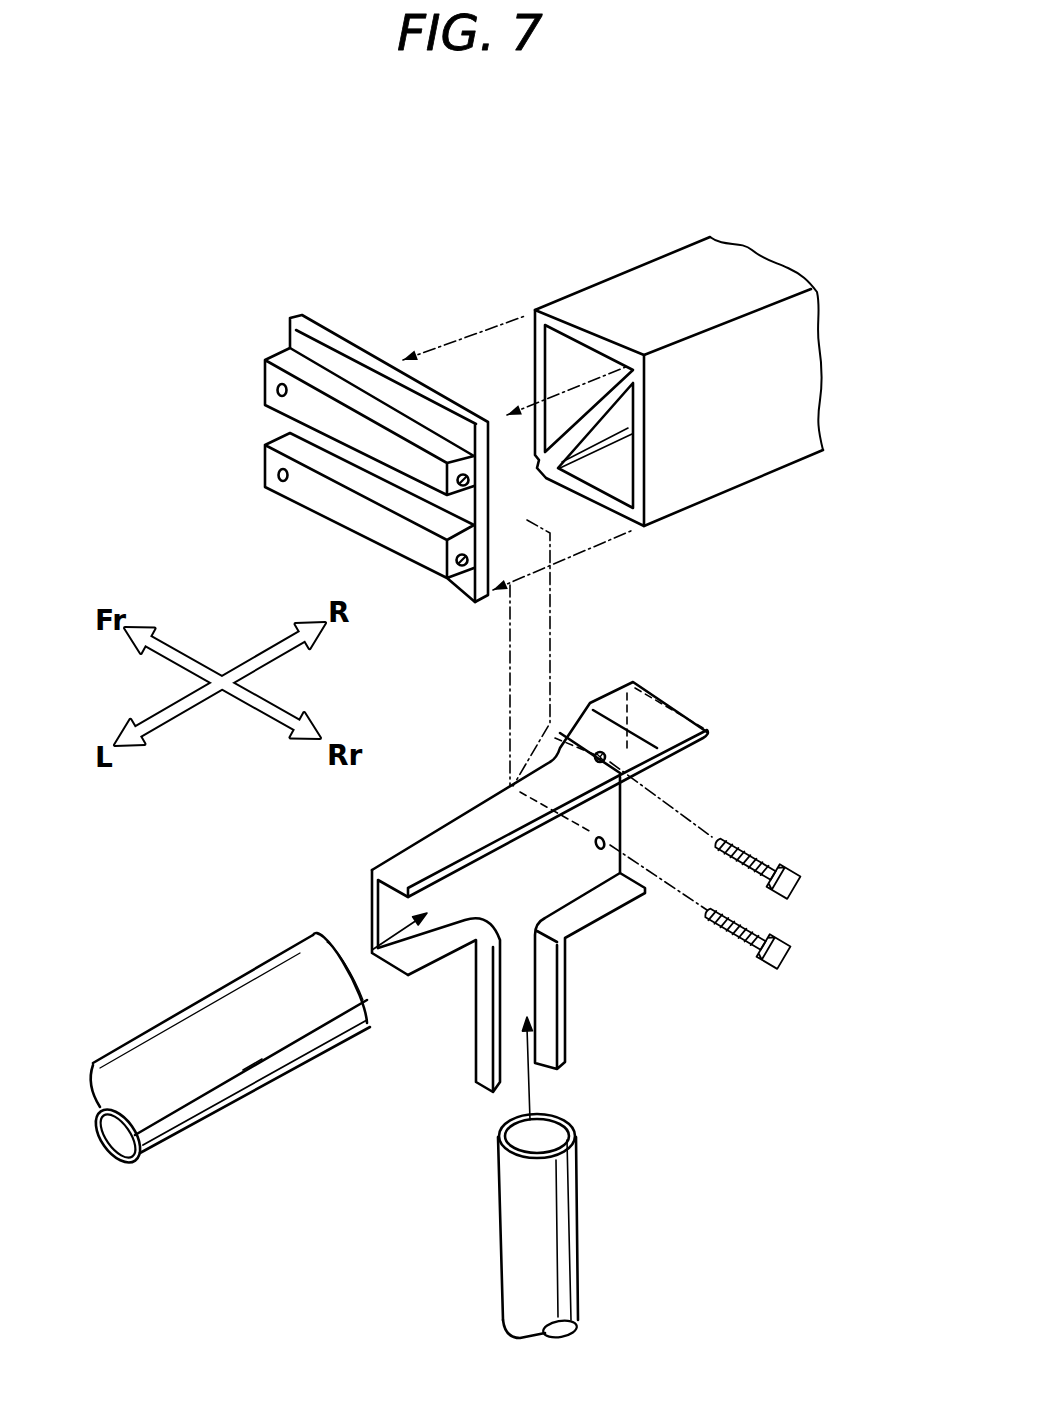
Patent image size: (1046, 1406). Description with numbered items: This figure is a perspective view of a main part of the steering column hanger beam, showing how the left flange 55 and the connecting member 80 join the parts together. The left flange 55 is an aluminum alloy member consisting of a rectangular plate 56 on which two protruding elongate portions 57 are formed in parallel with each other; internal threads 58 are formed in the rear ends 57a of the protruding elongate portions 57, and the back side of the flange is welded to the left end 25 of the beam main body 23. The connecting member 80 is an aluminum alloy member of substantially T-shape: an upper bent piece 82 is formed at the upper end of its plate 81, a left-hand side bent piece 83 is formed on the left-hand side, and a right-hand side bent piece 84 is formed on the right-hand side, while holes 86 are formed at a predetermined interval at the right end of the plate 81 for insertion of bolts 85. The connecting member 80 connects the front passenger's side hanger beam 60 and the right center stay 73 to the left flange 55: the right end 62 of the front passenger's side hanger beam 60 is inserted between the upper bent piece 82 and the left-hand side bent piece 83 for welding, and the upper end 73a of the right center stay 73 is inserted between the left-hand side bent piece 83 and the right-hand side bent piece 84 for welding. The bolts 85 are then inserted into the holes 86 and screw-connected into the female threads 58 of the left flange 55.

The beam main body 23 is at (671, 330).
The left end of the beam main body 25 is at (549, 306).
The left flange 55 is at (294, 476).
The rectangular plate 56 is at (302, 338).
The protruding elongate portions 57 is at (316, 523).
The rear ends of the protruding elongate portions 57a is at (433, 557).
The internal threads 58 is at (467, 556).
The front passenger's side hanger beam 60 is at (228, 1007).
The right end of the front passenger's side hanger beam 62 is at (249, 968).
The right center stay 73 is at (609, 1227).
The upper end of the right center stay 73a is at (577, 1155).
The connecting member 80 is at (583, 864).
The plate 81 is at (548, 873).
The upper bent piece 82 is at (437, 842).
The left-hand side bent piece 83 is at (490, 1005).
The right-hand side bent piece 84 is at (545, 980).
The bolts 85 is at (794, 958).
The holes 86 is at (605, 760).